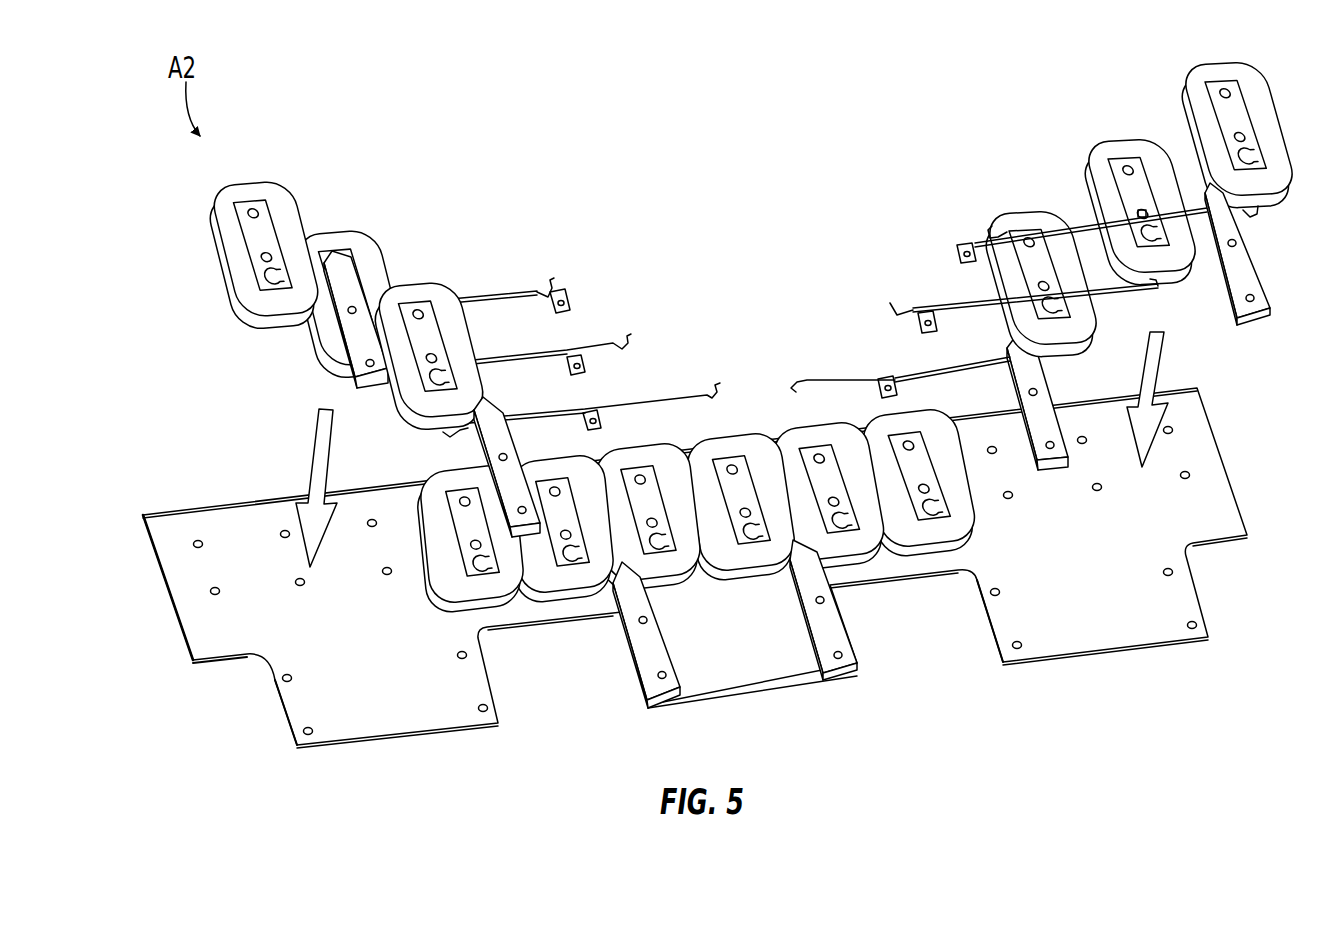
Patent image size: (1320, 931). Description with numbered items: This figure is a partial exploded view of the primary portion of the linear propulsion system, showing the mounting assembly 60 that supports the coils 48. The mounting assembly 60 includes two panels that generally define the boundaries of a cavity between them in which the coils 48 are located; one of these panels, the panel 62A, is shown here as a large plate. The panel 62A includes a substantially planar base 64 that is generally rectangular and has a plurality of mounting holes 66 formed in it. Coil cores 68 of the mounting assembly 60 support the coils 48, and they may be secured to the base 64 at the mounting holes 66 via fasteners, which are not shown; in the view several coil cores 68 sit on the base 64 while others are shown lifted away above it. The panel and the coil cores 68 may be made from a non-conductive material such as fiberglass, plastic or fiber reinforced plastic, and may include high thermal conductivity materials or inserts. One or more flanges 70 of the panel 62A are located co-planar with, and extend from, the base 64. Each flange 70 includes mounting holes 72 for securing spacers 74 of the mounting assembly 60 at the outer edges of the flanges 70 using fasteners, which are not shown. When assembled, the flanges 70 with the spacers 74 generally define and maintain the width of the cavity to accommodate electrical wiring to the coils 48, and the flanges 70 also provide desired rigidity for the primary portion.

The coils 48 is at (356, 252).
The mounting assembly 60 is at (176, 478).
The panel 62A is at (150, 554).
The base 64 is at (194, 623).
The mounting holes 66 is at (284, 531).
The coil cores 68 is at (735, 485).
The flanges 70 is at (390, 737).
The mounting holes 72 is at (305, 729).
The spacers 74 is at (664, 694).